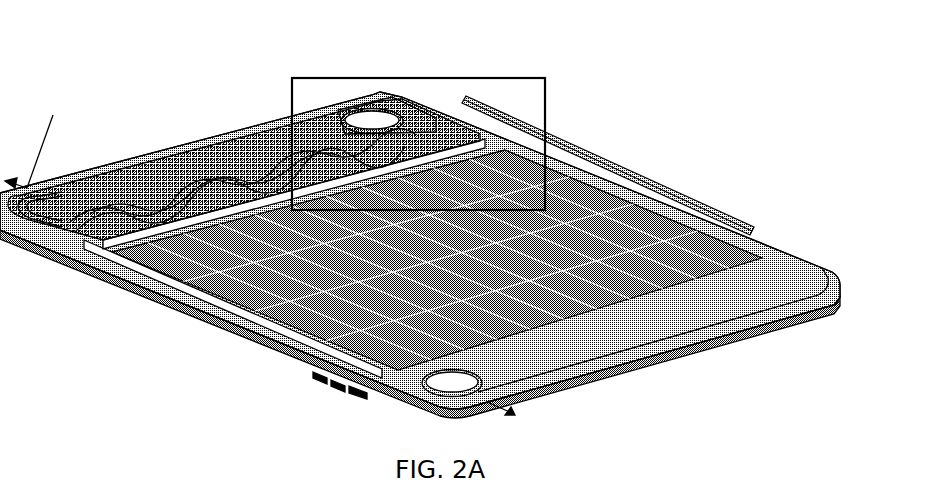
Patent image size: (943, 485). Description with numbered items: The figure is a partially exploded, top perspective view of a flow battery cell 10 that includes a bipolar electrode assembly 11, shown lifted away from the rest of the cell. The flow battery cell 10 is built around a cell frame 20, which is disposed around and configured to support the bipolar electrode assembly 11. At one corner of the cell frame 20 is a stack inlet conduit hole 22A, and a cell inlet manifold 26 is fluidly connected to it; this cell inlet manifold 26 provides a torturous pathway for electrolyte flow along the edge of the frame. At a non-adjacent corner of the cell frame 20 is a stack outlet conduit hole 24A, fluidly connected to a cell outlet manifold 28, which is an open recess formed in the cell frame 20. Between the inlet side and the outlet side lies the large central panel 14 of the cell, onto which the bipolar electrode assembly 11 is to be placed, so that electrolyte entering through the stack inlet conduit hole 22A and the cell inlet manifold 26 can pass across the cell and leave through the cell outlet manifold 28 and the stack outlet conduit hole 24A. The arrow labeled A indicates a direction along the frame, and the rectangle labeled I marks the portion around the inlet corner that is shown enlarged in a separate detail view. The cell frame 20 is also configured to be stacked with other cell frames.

The flow battery cell 10 is at (432, 35).
The bipolar electrode assembly 11 is at (605, 197).
The glass panel 14 is at (173, 255).
The cell frame 20 is at (218, 312).
The stack inlet conduit hole 22A is at (347, 118).
The stack outlet conduit hole 24A is at (433, 383).
The cell inlet manifold 26 is at (227, 148).
The cell outlet manifold 28 is at (585, 343).
The direction A is at (260, 247).
The portion I is at (545, 78).